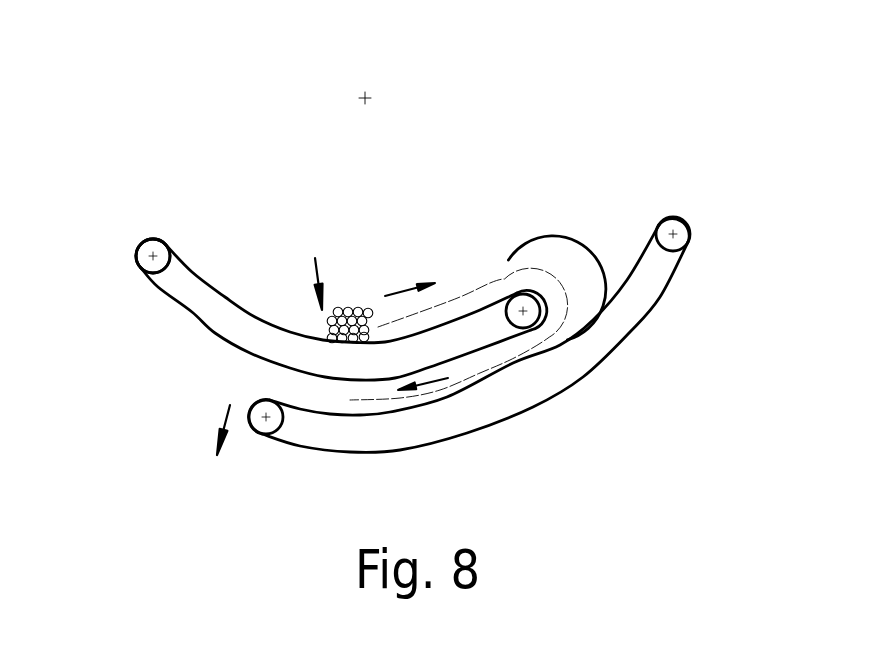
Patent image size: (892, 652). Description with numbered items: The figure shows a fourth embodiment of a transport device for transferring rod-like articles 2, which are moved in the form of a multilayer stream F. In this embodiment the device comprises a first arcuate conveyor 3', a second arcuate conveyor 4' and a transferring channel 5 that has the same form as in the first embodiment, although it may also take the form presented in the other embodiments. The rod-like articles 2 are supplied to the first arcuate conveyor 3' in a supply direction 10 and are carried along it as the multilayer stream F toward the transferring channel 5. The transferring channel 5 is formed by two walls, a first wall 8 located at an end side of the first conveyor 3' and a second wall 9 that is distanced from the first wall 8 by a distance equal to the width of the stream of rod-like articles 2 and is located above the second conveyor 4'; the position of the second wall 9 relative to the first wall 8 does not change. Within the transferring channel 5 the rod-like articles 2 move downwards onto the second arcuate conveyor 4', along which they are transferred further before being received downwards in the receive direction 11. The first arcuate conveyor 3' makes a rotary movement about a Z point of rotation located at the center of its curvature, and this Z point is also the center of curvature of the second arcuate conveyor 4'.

The point of rotation Z is at (365, 98).
The first arcuate conveyor 3' is at (329, 263).
The supply direction 10 is at (316, 283).
The rod-like articles 2 is at (348, 310).
The multilayer stream F is at (466, 300).
The first wall 8 is at (527, 292).
The transferring channel 5 is at (583, 233).
The second arcuate conveyor 4' is at (717, 252).
The second wall 9 is at (580, 305).
The receive direction 11 is at (225, 423).